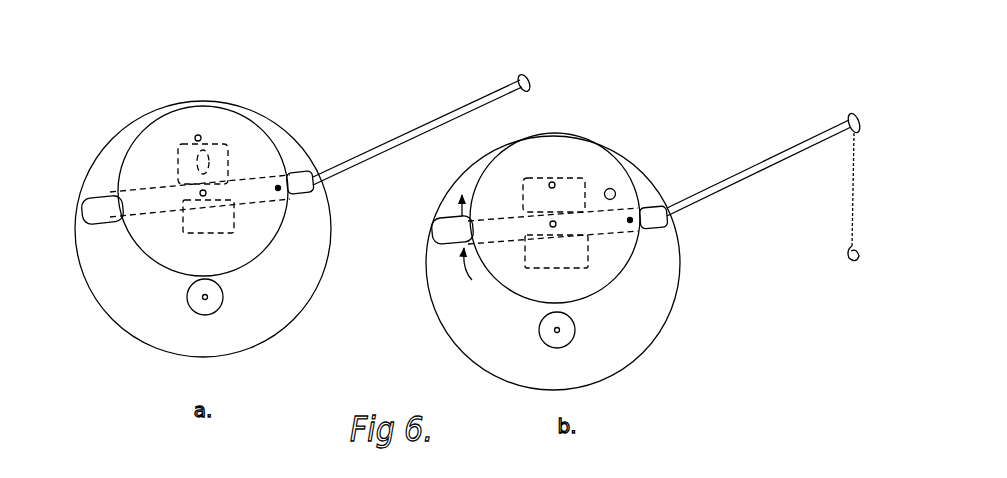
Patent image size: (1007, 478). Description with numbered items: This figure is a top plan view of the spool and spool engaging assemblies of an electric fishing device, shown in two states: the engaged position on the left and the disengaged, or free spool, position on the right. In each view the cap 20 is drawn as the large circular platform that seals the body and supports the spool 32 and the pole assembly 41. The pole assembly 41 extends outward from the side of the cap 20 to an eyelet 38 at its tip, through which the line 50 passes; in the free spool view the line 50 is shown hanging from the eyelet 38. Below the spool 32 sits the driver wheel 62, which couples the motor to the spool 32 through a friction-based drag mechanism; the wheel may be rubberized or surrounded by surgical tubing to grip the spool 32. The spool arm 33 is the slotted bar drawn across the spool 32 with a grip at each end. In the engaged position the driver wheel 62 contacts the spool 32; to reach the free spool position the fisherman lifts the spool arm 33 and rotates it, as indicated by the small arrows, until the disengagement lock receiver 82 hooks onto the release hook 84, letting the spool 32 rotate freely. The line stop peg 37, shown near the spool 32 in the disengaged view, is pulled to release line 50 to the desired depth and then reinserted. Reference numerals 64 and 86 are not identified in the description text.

The cap 20 is at (288, 280).
The spool 32 is at (291, 138).
The spool arm 33 is at (105, 208).
The line stop peg 37 is at (614, 192).
The eyelet 38 is at (532, 75).
The pole assembly 41 is at (407, 130).
The line 50 is at (851, 208).
The driver wheel 62 is at (226, 308).
The inner disc / body 64 is at (187, 278).
The disengagement lock receiver 82 is at (208, 155).
The release hook 84 is at (197, 134).
The stop pin 86 is at (276, 185).